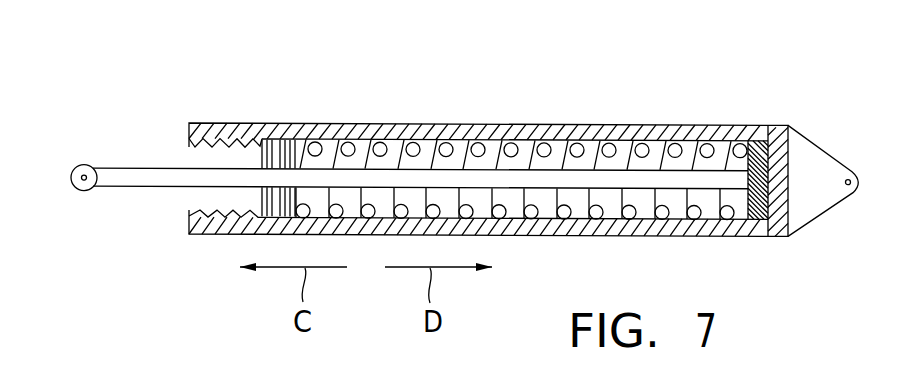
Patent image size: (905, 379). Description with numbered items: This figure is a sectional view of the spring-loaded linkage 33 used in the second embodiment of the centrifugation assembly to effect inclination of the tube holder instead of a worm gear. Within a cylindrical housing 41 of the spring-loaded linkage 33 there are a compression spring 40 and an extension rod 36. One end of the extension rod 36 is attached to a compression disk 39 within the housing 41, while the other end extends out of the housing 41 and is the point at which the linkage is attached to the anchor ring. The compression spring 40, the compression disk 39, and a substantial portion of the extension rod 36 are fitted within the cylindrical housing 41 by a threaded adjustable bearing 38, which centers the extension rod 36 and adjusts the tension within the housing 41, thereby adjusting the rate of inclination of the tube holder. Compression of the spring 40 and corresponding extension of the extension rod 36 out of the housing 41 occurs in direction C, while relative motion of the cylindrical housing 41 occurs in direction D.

The spring-loaded linkage 33 is at (206, 70).
The extension rod 36 is at (136, 168).
The threaded adjustable bearing 38 is at (274, 128).
The compression disk 39 is at (758, 140).
The compression spring 40 is at (365, 150).
The cylindrical housing 41 is at (447, 133).